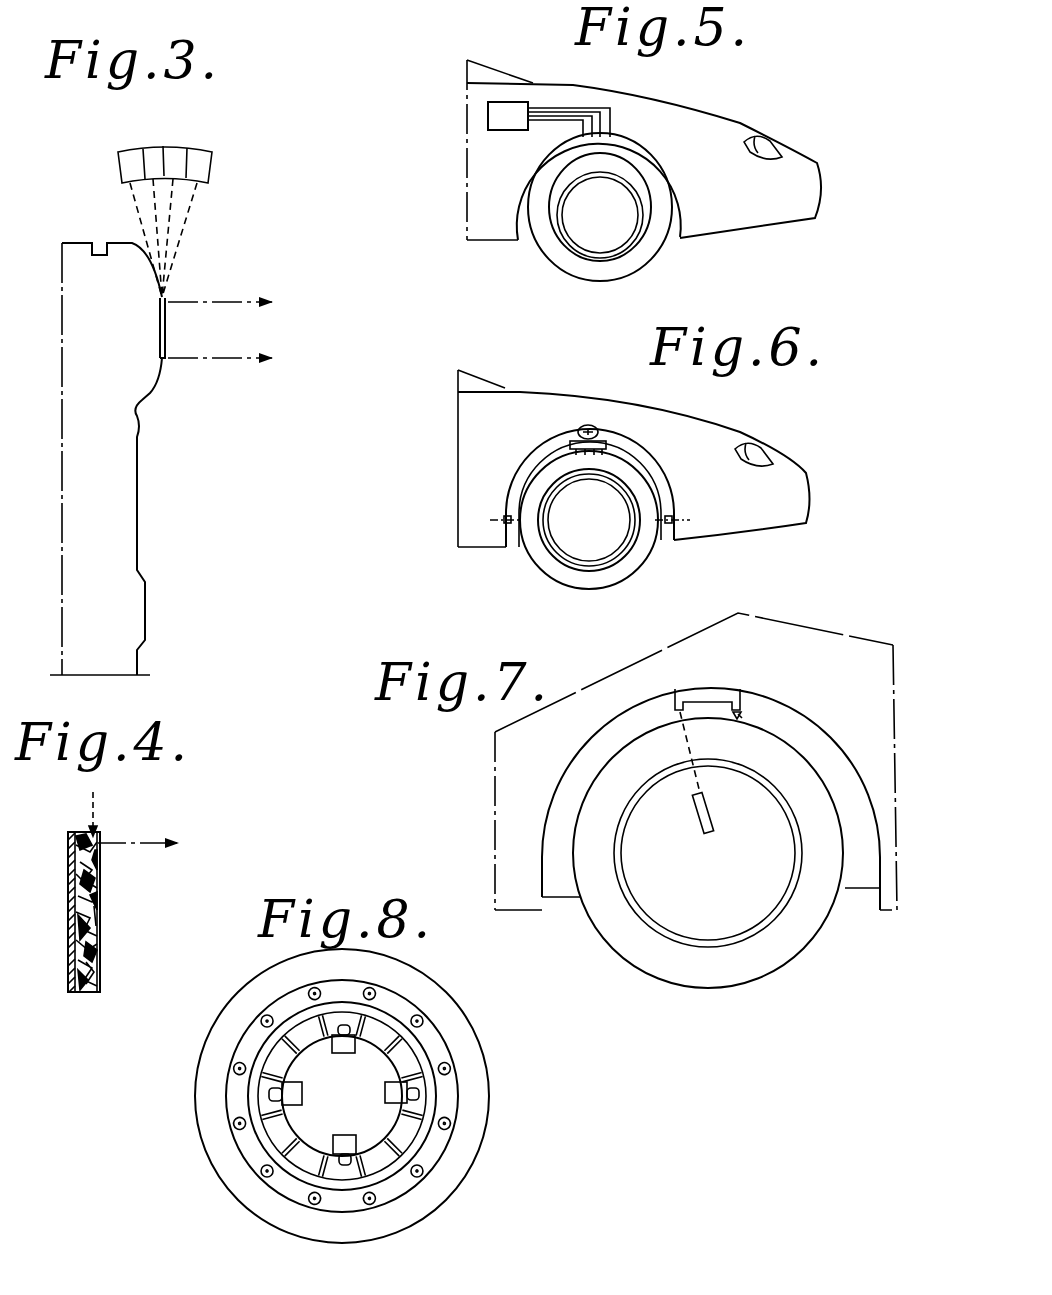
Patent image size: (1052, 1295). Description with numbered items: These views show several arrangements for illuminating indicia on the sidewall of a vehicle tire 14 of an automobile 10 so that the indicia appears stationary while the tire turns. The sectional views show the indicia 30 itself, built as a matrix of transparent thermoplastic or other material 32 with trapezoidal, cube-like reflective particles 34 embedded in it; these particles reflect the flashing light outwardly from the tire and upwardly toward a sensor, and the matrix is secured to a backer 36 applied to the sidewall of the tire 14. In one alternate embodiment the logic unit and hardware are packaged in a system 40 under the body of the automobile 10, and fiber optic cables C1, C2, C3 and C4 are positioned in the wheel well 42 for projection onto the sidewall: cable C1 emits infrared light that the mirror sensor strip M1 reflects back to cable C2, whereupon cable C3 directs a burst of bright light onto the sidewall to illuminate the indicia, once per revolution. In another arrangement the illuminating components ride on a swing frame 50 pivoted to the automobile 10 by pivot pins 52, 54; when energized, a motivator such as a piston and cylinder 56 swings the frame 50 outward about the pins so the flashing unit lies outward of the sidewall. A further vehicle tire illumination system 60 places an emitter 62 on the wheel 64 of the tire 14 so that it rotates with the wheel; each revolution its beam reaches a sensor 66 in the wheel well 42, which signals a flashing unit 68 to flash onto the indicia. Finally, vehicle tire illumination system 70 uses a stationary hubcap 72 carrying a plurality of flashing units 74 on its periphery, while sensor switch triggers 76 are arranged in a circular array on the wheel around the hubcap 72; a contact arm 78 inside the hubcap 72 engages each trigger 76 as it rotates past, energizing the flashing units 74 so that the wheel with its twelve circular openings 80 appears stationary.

In FIG. 5, the automobile 10 is at (740, 225).
In FIG. 6, the automobile 10 is at (788, 478).
In FIG. 3, the vehicle tire 14 is at (148, 397).
In FIG. 5, the vehicle tire 14 is at (633, 257).
In FIG. 6, the vehicle tire 14 is at (589, 520).
In FIG. 7, the vehicle tire 14 is at (645, 953).
In FIG. 8, the vehicle tire 14 is at (453, 1007).
In FIG. 3, the indicia 30 is at (165, 332).
In FIG. 4, the indicia 30 is at (100, 897).
In FIG. 4, the transparent matrix 32 is at (98, 975).
In FIG. 4, the reflective particles 34 is at (98, 842).
In FIG. 4, the backer 36 is at (77, 920).
In FIG. 5, the system 40 is at (498, 116).
In FIG. 7, the wheel well 42 is at (796, 724).
In FIG. 6, the swing frame 50 is at (642, 450).
In FIG. 6, the pivot pin 52 is at (672, 525).
In FIG. 6, the pivot pin 54 is at (504, 525).
In FIG. 6, the piston and cylinder 56 is at (593, 424).
In FIG. 7, the vehicle tire illumination system 60 is at (778, 810).
In FIG. 7, the emitter 62 is at (700, 822).
In FIG. 7, the wheel 64 is at (743, 907).
In FIG. 7, the sensor 66 is at (680, 695).
In FIG. 7, the flashing unit 68 is at (735, 695).
In FIG. 8, the vehicle tire illumination system 70 is at (170, 1072).
In FIG. 8, the stationary hubcap 72 is at (366, 1136).
In FIG. 8, the flashing units 74 is at (394, 1086).
In FIG. 8, the sensor switch triggers 76 is at (396, 1152).
In FIG. 8, the contact arm 78 is at (290, 1120).
In FIG. 8, the circular openings 80 is at (450, 1125).
In FIG. 5, the fiber optic cable C1 is at (531, 131).
In FIG. 5, the fiber optic cable C2 is at (556, 120).
In FIG. 5, the fiber optic cable C3 is at (610, 115).
In FIG. 5, the fiber optic cable C4 is at (556, 120).
In FIG. 5, the mirror sensor strip M1 is at (628, 164).